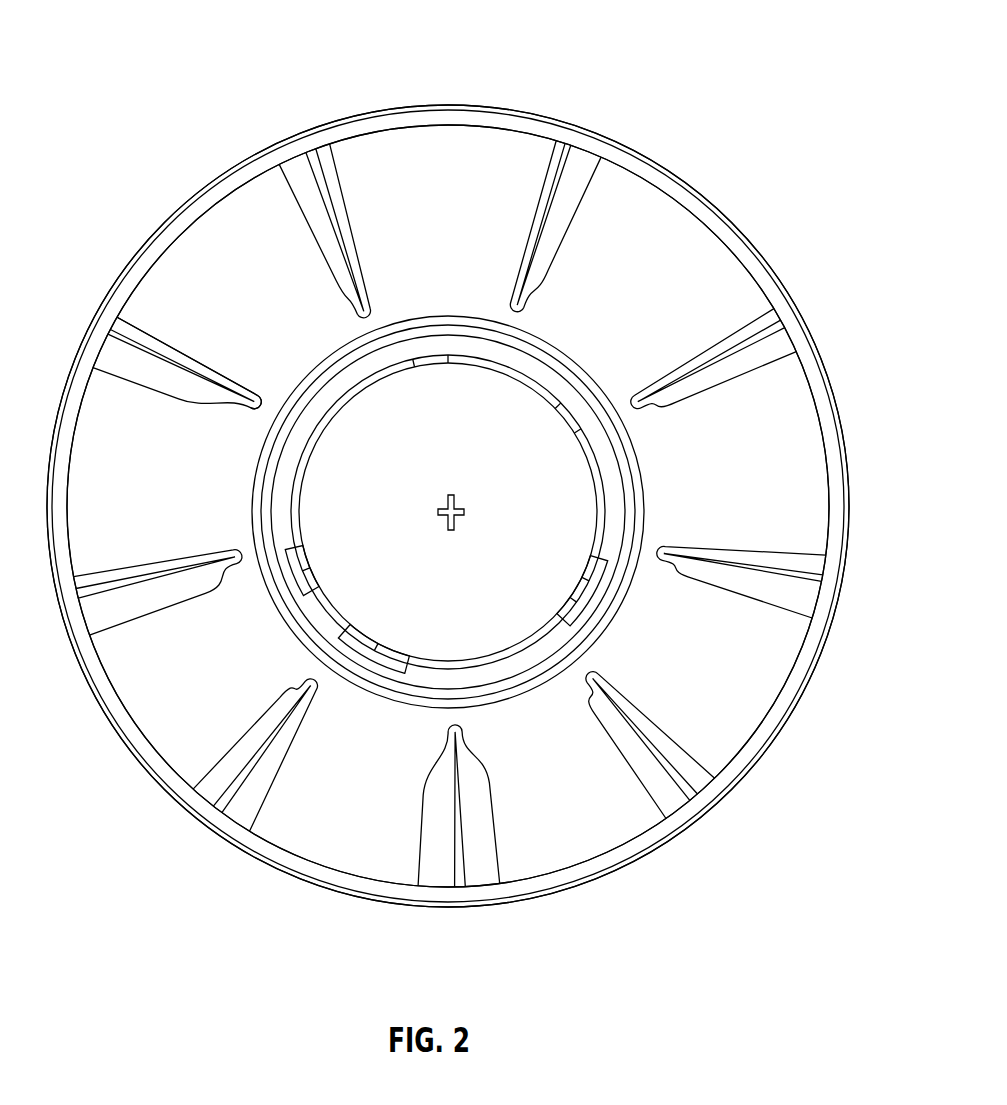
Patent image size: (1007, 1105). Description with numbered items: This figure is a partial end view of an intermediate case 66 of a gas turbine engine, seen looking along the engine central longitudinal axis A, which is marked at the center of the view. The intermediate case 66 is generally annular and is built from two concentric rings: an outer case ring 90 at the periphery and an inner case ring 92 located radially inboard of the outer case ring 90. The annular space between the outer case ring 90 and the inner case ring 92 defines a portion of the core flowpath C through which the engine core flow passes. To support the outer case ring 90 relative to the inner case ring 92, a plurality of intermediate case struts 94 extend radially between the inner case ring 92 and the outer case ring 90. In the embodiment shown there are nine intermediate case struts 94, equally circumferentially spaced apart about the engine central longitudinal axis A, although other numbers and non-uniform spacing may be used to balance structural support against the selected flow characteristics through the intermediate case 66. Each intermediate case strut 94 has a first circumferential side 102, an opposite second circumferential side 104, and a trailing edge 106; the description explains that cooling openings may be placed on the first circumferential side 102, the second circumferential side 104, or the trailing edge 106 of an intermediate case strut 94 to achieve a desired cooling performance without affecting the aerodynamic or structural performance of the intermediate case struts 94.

The intermediate case 66 is at (120, 45).
The outer case ring 90 is at (651, 152).
The inner case ring 92 is at (567, 630).
The intermediate case struts 94 is at (296, 171).
The first circumferential side 102 is at (155, 378).
The second circumferential side 104 is at (190, 350).
The trailing edge 106 is at (260, 404).
The engine central longitudinal axis A is at (458, 504).
The core flowpath C is at (398, 200).